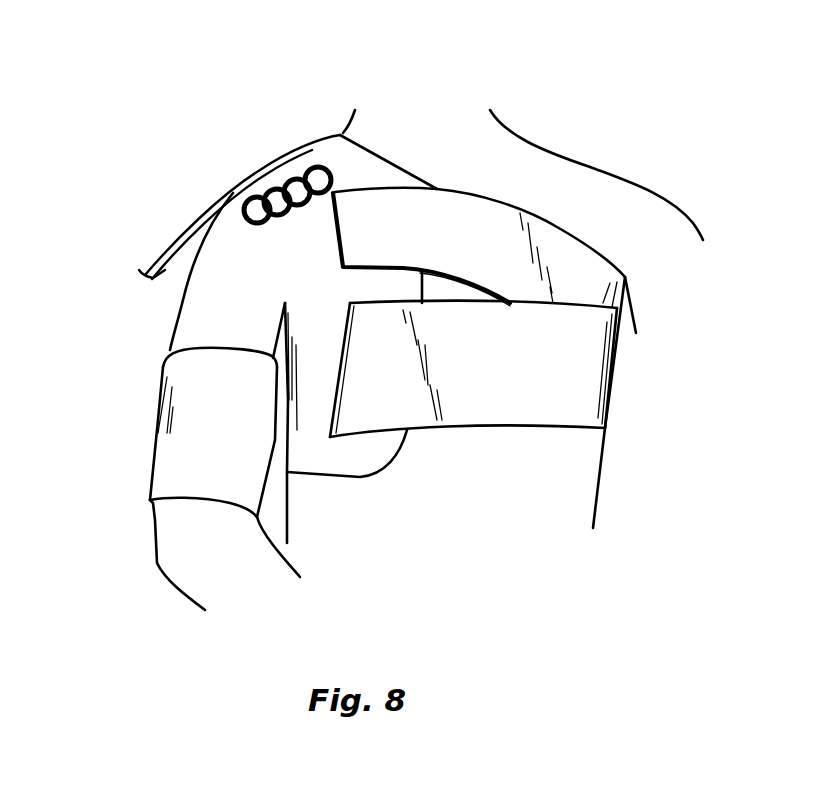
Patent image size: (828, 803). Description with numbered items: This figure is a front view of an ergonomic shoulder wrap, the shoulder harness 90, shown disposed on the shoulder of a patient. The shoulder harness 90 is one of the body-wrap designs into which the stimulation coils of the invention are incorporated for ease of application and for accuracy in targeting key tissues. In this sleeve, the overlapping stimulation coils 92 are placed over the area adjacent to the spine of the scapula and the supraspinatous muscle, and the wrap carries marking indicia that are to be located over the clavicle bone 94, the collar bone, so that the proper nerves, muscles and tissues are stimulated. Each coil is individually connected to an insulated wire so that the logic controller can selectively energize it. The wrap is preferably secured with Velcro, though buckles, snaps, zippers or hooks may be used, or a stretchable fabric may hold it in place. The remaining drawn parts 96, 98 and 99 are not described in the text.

The shoulder harness 90 is at (367, 231).
The stimulation coils 92 is at (270, 180).
The clavicle bone 94 is at (333, 147).
The shoulder strap 96 is at (160, 262).
The neck opening 98 is at (428, 127).
The sleeve 99 is at (207, 528).